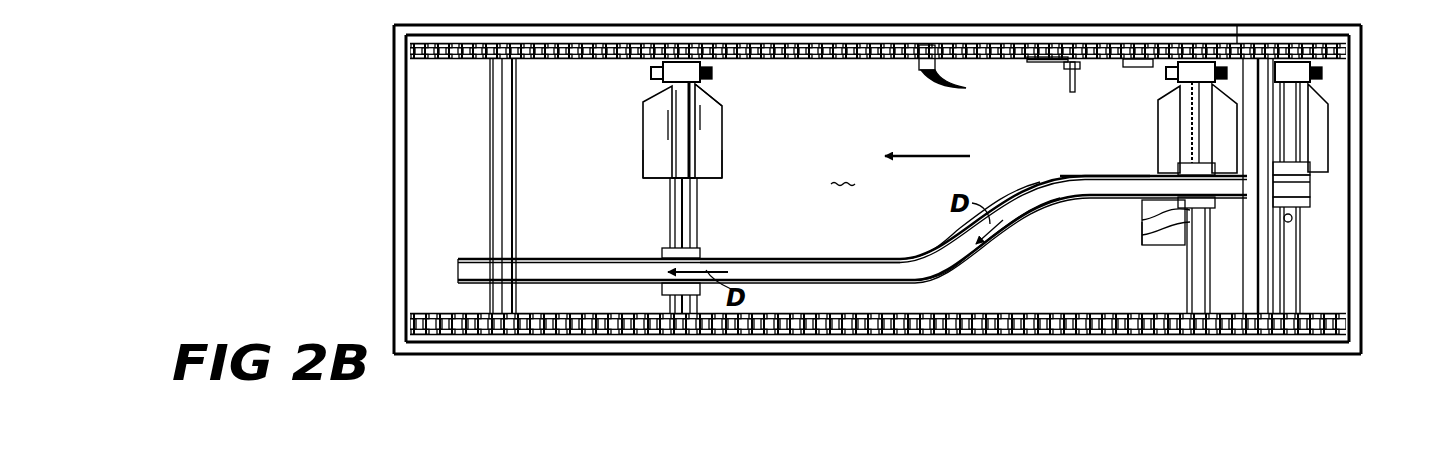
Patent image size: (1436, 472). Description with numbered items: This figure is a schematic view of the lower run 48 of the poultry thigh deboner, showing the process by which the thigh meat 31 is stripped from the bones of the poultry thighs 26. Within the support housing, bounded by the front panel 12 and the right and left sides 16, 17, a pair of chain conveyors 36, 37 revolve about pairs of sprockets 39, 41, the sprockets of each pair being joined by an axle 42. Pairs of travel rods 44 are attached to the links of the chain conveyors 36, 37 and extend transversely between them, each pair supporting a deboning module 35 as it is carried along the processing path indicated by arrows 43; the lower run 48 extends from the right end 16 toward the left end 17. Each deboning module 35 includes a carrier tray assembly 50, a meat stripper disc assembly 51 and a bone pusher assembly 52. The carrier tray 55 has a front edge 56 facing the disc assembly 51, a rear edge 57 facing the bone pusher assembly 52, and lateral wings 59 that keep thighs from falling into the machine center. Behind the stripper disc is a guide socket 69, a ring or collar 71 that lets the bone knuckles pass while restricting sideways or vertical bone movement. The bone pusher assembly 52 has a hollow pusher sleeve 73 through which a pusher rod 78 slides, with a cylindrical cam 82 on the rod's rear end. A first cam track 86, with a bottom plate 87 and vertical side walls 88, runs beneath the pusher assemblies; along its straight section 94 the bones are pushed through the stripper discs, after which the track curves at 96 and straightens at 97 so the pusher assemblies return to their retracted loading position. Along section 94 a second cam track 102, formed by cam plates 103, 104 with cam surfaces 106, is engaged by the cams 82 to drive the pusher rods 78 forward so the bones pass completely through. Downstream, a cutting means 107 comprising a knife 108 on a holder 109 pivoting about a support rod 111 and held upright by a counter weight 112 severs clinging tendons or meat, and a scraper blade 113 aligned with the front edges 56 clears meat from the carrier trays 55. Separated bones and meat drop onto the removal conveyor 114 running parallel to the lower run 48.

The front panel 12 is at (1210, 355).
The right side 16 is at (1361, 232).
The left side 17 is at (394, 238).
The poultry thigh 26 is at (1222, 107).
The thigh meat 31 is at (1170, 101).
The deboning module 35 is at (739, 149).
The chain conveyor 36 is at (418, 62).
The chain conveyor 37 is at (980, 348).
The sprockets 39 is at (463, 44).
The sprockets 41 is at (1327, 55).
The axle 42 is at (488, 148).
The processing path 43 is at (907, 158).
The travel rods 44 is at (672, 237).
The lower run 48 is at (844, 173).
The carrier tray assembly 50 is at (722, 183).
The meat stripper disc assembly 51 is at (648, 93).
The bone pusher assembly 52 is at (712, 243).
The carrier tray 55 is at (657, 168).
The front edge 56 is at (706, 100).
The rear edge 57 is at (699, 180).
The wings 59 is at (643, 163).
The guide socket 69 is at (715, 70).
The collar 71 is at (685, 60).
The pusher sleeve 73 is at (690, 239).
The pusher rod 78 is at (1205, 212).
The cam 82 is at (1193, 227).
The first cam track 86 is at (877, 249).
The bottom plate 87 is at (922, 269).
The side walls 88 is at (944, 264).
The straight section 94 is at (1108, 178).
The curve 96 is at (972, 259).
The straight section 97 is at (612, 262).
The second cam track 102 is at (1140, 263).
The cam plate 103 is at (1172, 246).
The cam plate 104 is at (1142, 214).
The cam surfaces 106 is at (1142, 237).
The cutting means 107 is at (1037, 106).
The knife 108 is at (1043, 64).
The holder 109 is at (1078, 69).
The support rod 111 is at (1072, 93).
The counter weight 112 is at (1132, 59).
The scraper blade 113 is at (938, 83).
The removal conveyor 114 is at (1238, 43).